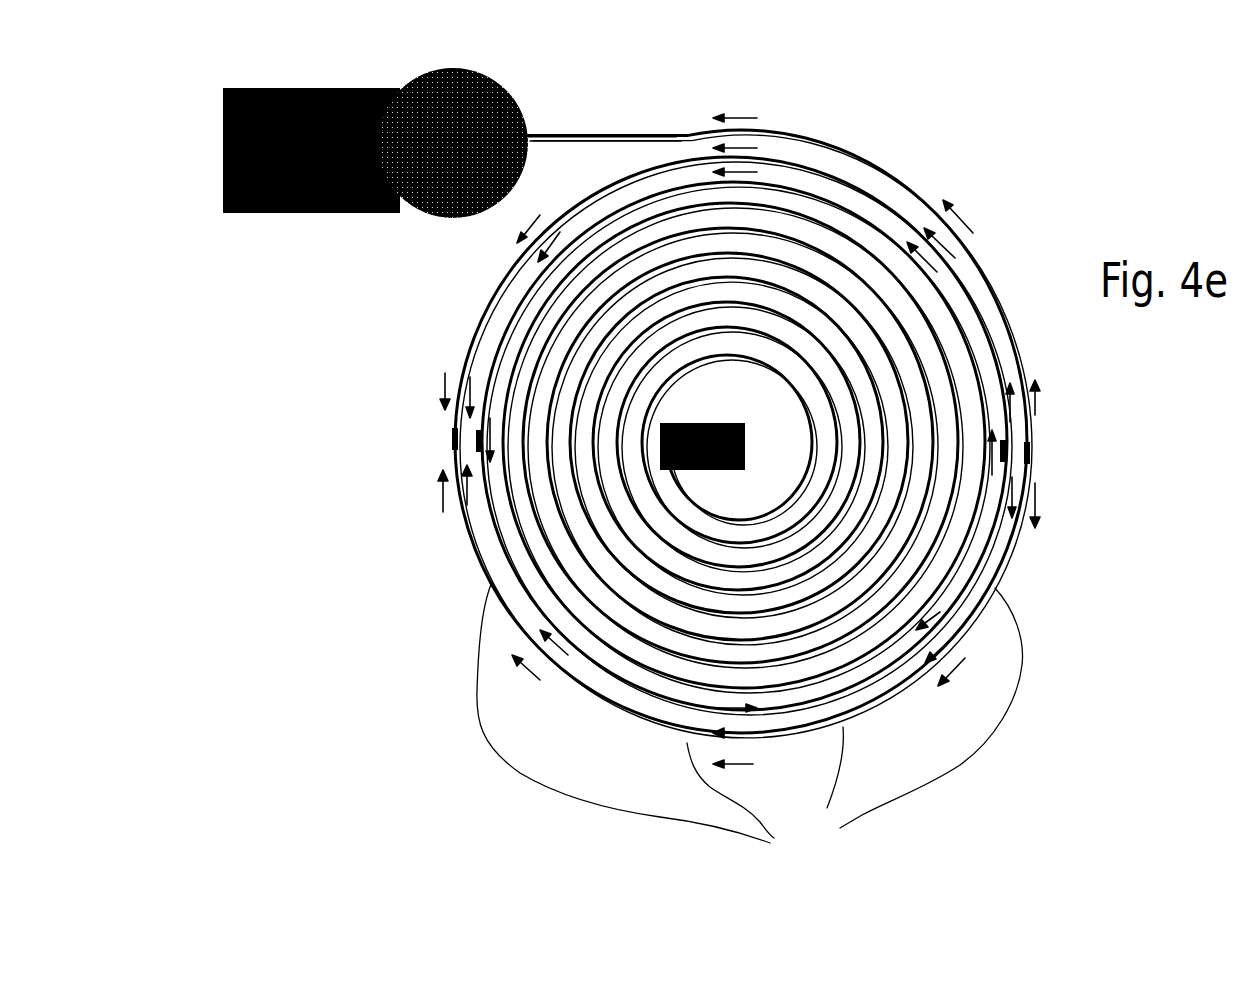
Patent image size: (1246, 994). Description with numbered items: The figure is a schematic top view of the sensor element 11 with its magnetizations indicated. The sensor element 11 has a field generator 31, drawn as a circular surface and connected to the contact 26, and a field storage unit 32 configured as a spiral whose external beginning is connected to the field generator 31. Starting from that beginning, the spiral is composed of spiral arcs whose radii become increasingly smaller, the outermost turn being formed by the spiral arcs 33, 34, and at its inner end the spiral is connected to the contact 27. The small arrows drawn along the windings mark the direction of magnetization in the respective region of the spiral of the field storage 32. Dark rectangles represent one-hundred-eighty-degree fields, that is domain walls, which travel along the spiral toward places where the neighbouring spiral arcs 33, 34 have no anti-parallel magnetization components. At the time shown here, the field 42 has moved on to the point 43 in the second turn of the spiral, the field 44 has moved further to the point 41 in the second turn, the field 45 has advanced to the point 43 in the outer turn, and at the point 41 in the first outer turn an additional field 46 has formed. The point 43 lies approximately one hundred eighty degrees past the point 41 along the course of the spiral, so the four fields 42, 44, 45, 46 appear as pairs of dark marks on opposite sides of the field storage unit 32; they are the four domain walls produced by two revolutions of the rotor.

The sensor element 11 is at (345, 589).
The contact 26 is at (282, 215).
The contact 27 is at (745, 437).
The field generator 31 is at (420, 215).
The field storage unit 32 is at (545, 320).
The spiral arc 33 is at (995, 293).
The spiral arc 34 is at (750, 729).
The point on the spiral 41 is at (1094, 468).
The 180-degree field 42 is at (455, 430).
The point on the spiral 43 is at (365, 461).
The 180-degree field 44 is at (1005, 450).
The 180-degree field 45 is at (450, 448).
The 180-degree field 46 is at (1033, 465).